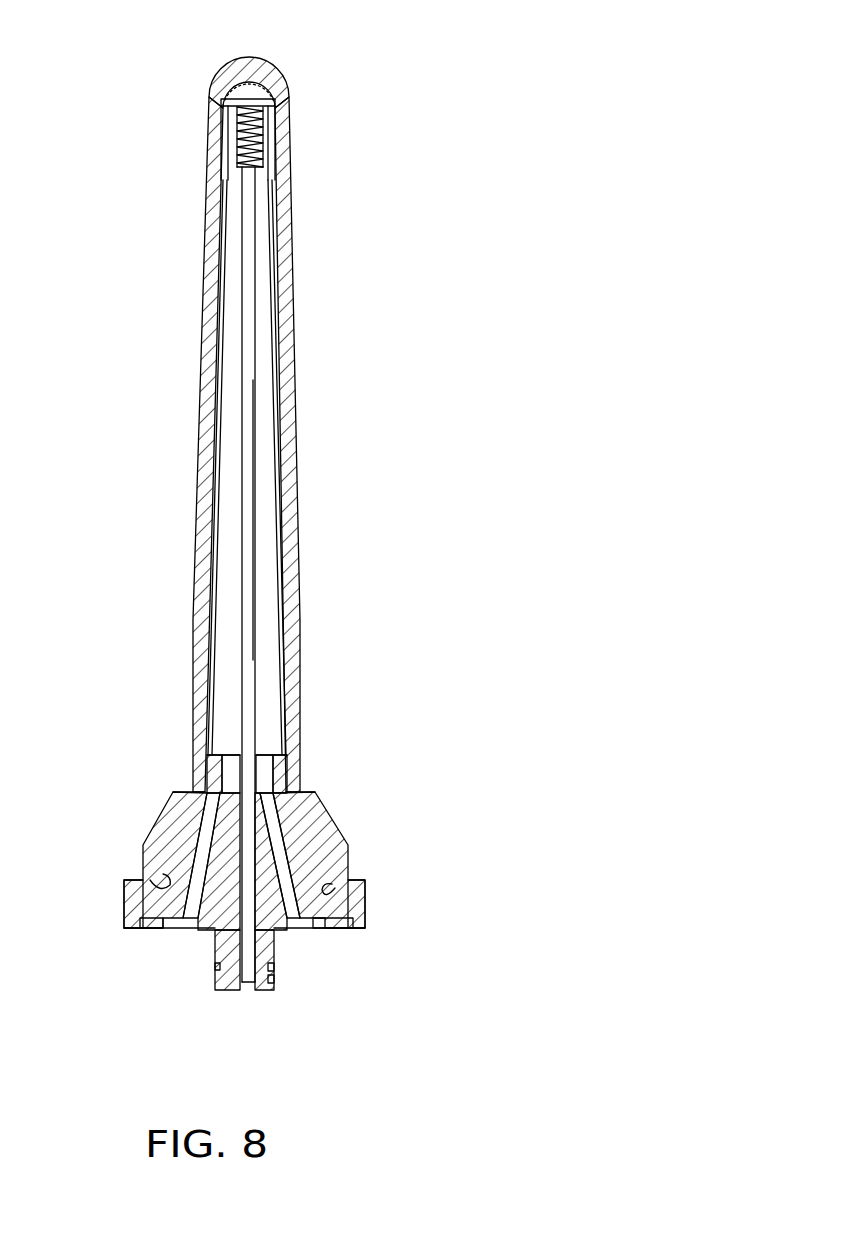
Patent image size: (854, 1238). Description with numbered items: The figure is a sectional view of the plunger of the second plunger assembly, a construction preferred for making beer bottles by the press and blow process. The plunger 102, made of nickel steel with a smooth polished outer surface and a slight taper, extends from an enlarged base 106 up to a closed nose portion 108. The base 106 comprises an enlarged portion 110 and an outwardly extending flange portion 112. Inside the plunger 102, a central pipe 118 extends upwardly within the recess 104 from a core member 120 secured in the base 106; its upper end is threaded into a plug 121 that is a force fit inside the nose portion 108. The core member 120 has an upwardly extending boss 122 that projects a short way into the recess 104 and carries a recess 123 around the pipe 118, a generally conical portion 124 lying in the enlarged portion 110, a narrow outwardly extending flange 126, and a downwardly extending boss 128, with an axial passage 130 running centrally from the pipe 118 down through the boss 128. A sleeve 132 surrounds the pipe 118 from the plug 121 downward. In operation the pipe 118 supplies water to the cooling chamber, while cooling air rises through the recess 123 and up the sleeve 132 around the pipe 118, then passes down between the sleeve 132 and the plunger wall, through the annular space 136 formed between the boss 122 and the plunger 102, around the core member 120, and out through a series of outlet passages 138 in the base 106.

The plunger 102 is at (340, 415).
The recess 104 is at (278, 484).
The base 106 is at (322, 825).
The nose portion 108 is at (262, 60).
The enlarged portion 110 is at (165, 832).
The flange portion 112 is at (132, 913).
The central pipe 118 is at (256, 546).
The core member 120 is at (267, 950).
The plug 121 is at (270, 135).
The boss 122 is at (273, 773).
The recess 123 is at (230, 767).
The conical portion 124 is at (287, 855).
The flange 126 is at (178, 925).
The boss 128 is at (272, 980).
The axial passage 130 is at (243, 985).
The sleeve 132 is at (272, 273).
The annular space 136 is at (202, 768).
The outlet passages 138 is at (150, 880).